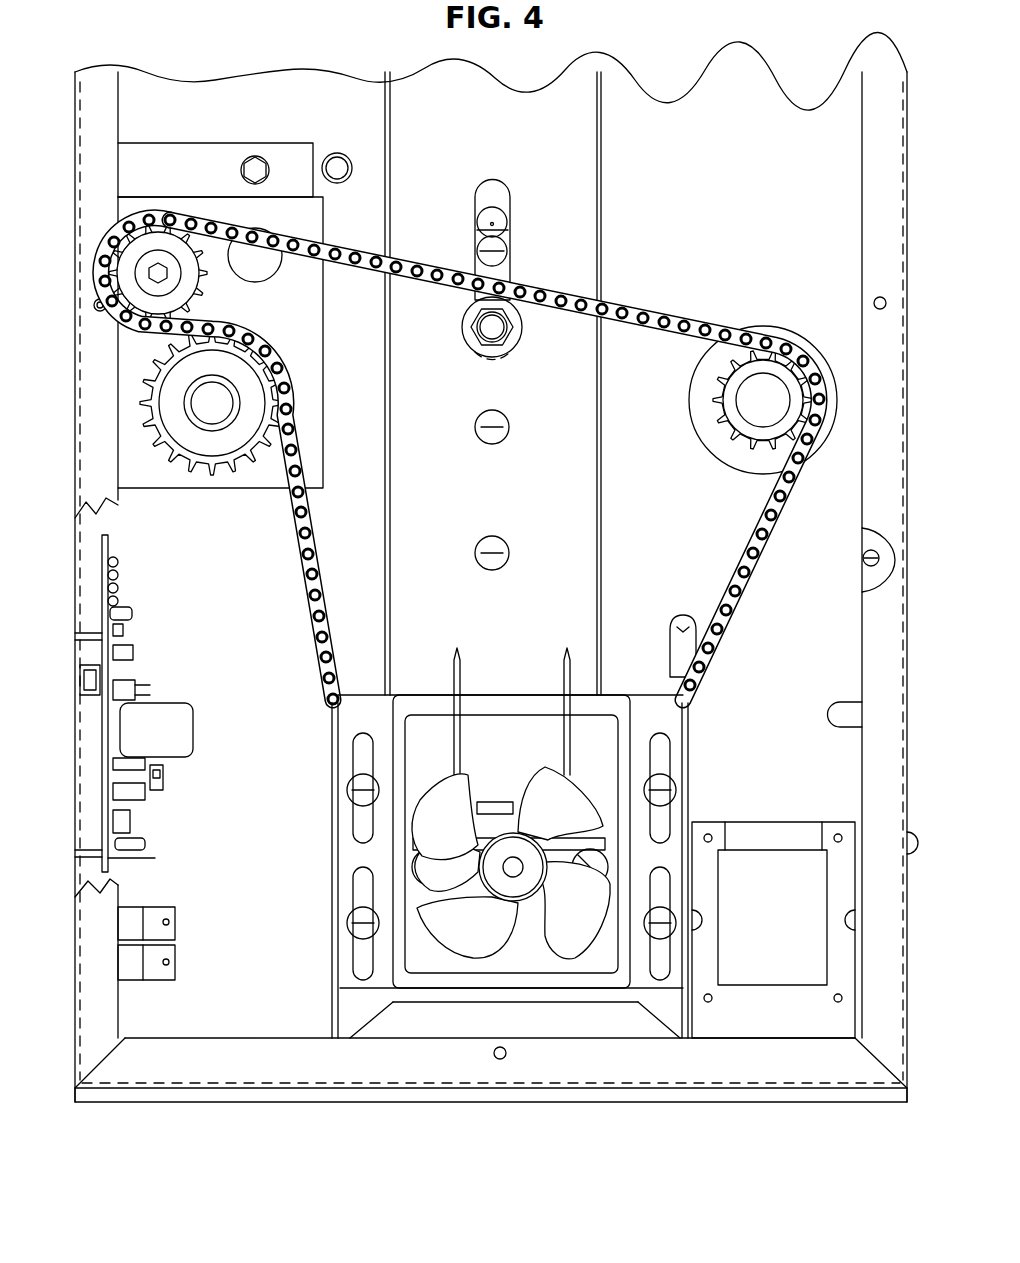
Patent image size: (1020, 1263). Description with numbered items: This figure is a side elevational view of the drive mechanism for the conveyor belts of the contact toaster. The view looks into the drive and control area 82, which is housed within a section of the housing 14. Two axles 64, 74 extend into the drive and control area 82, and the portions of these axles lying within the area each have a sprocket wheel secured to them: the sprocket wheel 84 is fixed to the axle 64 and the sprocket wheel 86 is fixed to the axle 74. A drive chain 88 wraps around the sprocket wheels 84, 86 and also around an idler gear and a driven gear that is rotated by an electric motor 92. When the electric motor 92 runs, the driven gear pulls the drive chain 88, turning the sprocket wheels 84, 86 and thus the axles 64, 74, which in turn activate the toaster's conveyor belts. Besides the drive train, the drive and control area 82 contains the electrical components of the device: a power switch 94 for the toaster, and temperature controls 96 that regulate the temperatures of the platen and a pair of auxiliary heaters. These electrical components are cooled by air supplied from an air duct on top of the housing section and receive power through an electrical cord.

The housing 14 is at (76, 90).
The drive and control area 82 is at (745, 84).
The drive chain 88 is at (160, 233).
The axle 74 is at (748, 405).
The sprocket wheel 86 is at (752, 457).
The axle 64 is at (205, 425).
The sprocket wheel 84 is at (223, 478).
The electric motor 92 is at (537, 983).
The power switch 94 is at (143, 980).
The temperature controls 96 is at (187, 757).